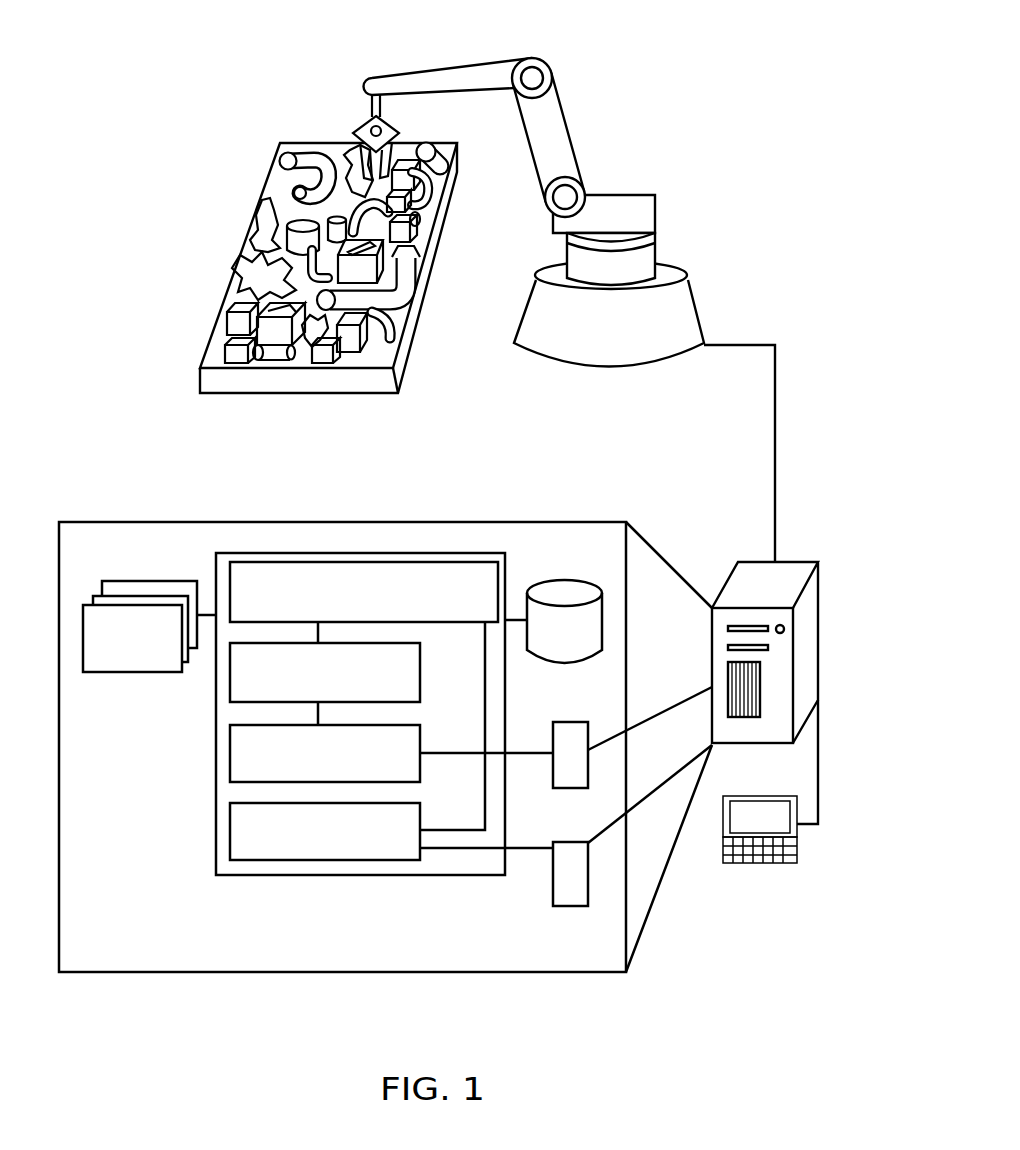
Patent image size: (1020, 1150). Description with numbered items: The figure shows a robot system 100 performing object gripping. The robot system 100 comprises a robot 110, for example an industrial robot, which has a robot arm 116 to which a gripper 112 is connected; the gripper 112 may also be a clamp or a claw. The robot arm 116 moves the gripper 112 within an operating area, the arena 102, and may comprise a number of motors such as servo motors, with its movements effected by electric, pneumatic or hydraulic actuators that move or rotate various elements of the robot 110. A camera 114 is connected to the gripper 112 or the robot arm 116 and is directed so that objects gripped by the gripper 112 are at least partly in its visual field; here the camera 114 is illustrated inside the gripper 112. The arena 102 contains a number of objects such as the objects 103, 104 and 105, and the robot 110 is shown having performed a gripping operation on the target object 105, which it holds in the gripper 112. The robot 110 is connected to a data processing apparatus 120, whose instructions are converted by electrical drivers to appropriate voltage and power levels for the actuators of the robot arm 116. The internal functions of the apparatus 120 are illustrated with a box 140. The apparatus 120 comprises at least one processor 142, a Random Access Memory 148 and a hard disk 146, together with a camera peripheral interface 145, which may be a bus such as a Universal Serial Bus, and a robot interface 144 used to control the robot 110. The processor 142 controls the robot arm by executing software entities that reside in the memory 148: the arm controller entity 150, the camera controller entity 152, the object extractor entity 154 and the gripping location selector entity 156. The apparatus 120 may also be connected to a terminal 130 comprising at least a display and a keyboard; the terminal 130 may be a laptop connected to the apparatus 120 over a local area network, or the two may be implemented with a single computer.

The robot system 100 is at (167, 121).
The arena 102 is at (305, 392).
The object 103 is at (225, 322).
The object 104 is at (277, 160).
The target object 105 is at (354, 143).
The robot 110 is at (612, 367).
The gripper 112 is at (400, 133).
The camera 114 is at (362, 122).
The robot arm 116 is at (467, 65).
The data processing apparatus 120 is at (808, 560).
The terminal 130 is at (773, 863).
The box 140 is at (537, 973).
The processor 142 is at (143, 672).
The robot interface 144 is at (575, 907).
The camera peripheral interface 145 is at (575, 792).
The hard disk 146 is at (567, 668).
The Random Access Memory 148 is at (393, 552).
The arm controller entity 150 is at (228, 830).
The camera controller entity 152 is at (230, 757).
The object extractor entity 154 is at (230, 677).
The gripping location selector entity 156 is at (298, 560).